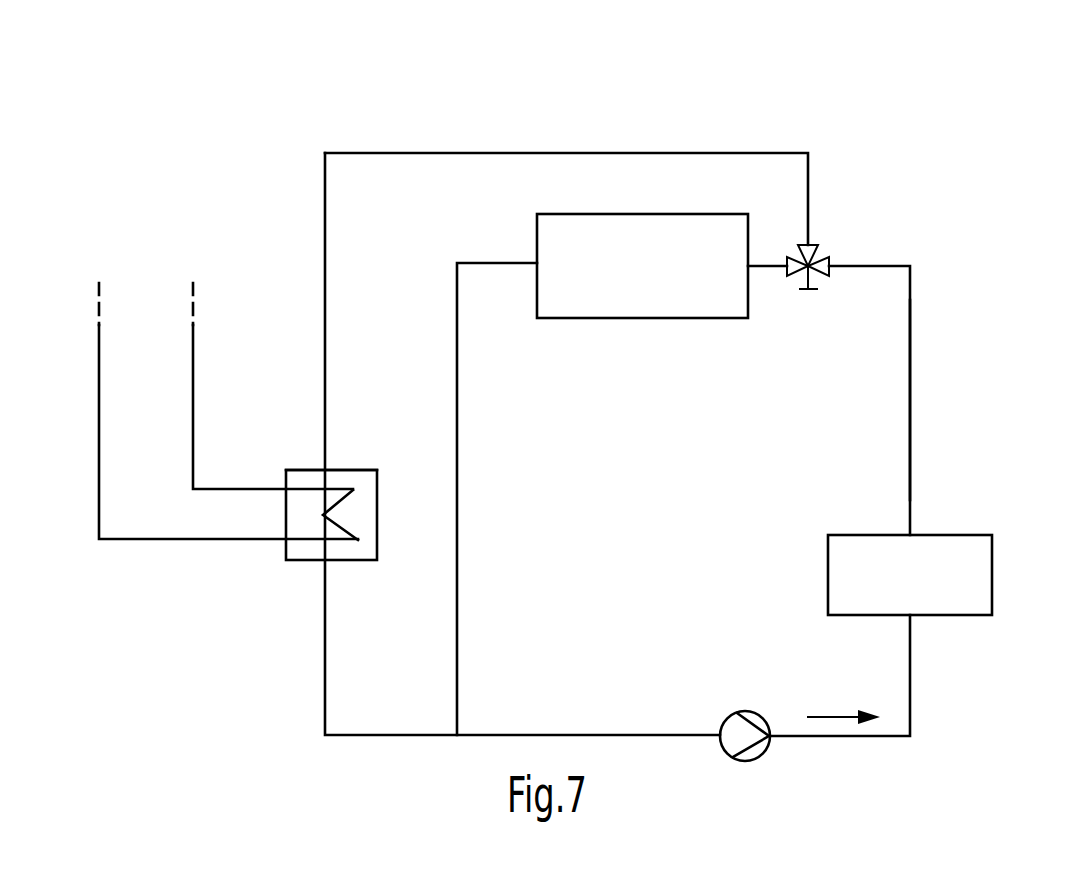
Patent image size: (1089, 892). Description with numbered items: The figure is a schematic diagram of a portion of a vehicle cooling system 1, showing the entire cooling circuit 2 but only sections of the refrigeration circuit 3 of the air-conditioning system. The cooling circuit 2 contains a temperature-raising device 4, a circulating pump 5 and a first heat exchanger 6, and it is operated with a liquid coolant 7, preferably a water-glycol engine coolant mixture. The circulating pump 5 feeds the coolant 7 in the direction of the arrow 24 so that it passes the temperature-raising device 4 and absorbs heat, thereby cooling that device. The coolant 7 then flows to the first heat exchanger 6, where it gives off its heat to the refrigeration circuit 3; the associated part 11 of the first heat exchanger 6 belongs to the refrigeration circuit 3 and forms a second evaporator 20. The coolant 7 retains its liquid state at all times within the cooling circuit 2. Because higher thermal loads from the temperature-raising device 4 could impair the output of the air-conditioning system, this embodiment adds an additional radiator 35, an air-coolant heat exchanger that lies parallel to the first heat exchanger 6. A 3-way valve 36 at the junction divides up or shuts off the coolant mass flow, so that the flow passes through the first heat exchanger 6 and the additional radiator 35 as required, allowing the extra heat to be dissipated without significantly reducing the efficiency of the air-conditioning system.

The vehicle cooling system 1 is at (198, 145).
The cooling circuit 2 is at (986, 208).
The refrigeration circuit 3 is at (132, 272).
The temperature-raising device 4 is at (953, 555).
The circulating pump 5 is at (757, 752).
The first heat exchanger 6 is at (366, 515).
The coolant 7 is at (910, 350).
The associated part of the first heat exchanger 11 is at (278, 454).
The second evaporator 20 is at (328, 528).
The arrow 24 is at (835, 712).
The additional radiator 35 is at (656, 290).
The 3-way valve 36 is at (822, 255).